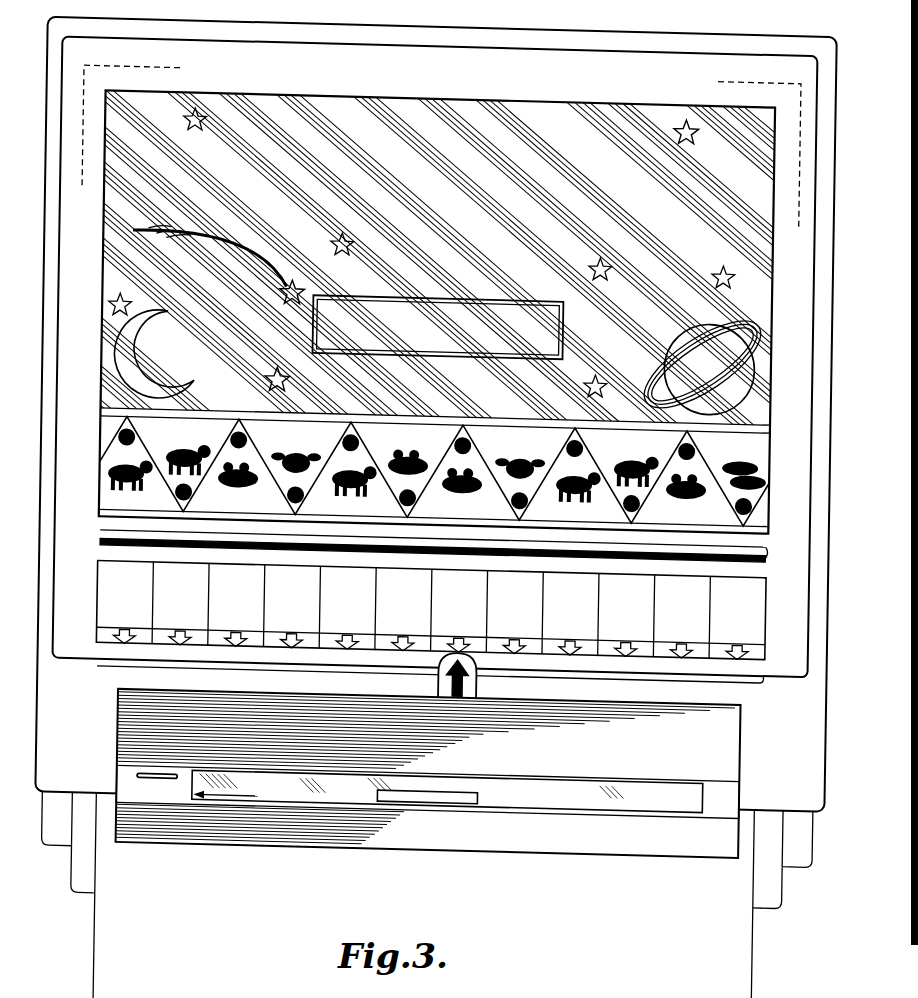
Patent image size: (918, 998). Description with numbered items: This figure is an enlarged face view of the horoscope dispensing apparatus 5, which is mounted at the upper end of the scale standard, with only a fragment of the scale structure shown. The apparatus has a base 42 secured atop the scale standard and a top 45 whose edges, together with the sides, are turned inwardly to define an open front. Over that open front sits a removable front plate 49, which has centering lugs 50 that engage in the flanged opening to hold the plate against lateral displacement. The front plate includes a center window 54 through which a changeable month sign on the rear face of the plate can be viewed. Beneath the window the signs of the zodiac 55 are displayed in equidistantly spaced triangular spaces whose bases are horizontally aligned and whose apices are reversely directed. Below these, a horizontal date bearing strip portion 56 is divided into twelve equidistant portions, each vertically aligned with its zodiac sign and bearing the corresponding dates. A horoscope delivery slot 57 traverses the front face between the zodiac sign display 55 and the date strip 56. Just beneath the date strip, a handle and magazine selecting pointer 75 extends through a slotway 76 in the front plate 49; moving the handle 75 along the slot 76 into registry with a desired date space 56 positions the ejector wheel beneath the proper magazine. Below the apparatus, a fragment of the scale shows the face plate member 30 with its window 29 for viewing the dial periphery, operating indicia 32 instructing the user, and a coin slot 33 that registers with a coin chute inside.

The horoscope dispensing apparatus 5 is at (762, 13).
The top 45 is at (292, 14).
The removable front plate 49 is at (169, 44).
The centering lugs 50 is at (99, 70).
The center window 54 is at (502, 299).
The signs of the zodiac 55 is at (357, 411).
The date bearing strip portion 56 is at (122, 595).
The horoscope delivery slot 57 is at (109, 537).
The handle and magazine selecting pointer 75 is at (484, 676).
The slotway 76 is at (576, 660).
The base 42 is at (783, 790).
The window 29 is at (653, 785).
The face plate member 30 is at (201, 793).
The indicia 32 is at (351, 784).
The coin slot 33 is at (172, 776).